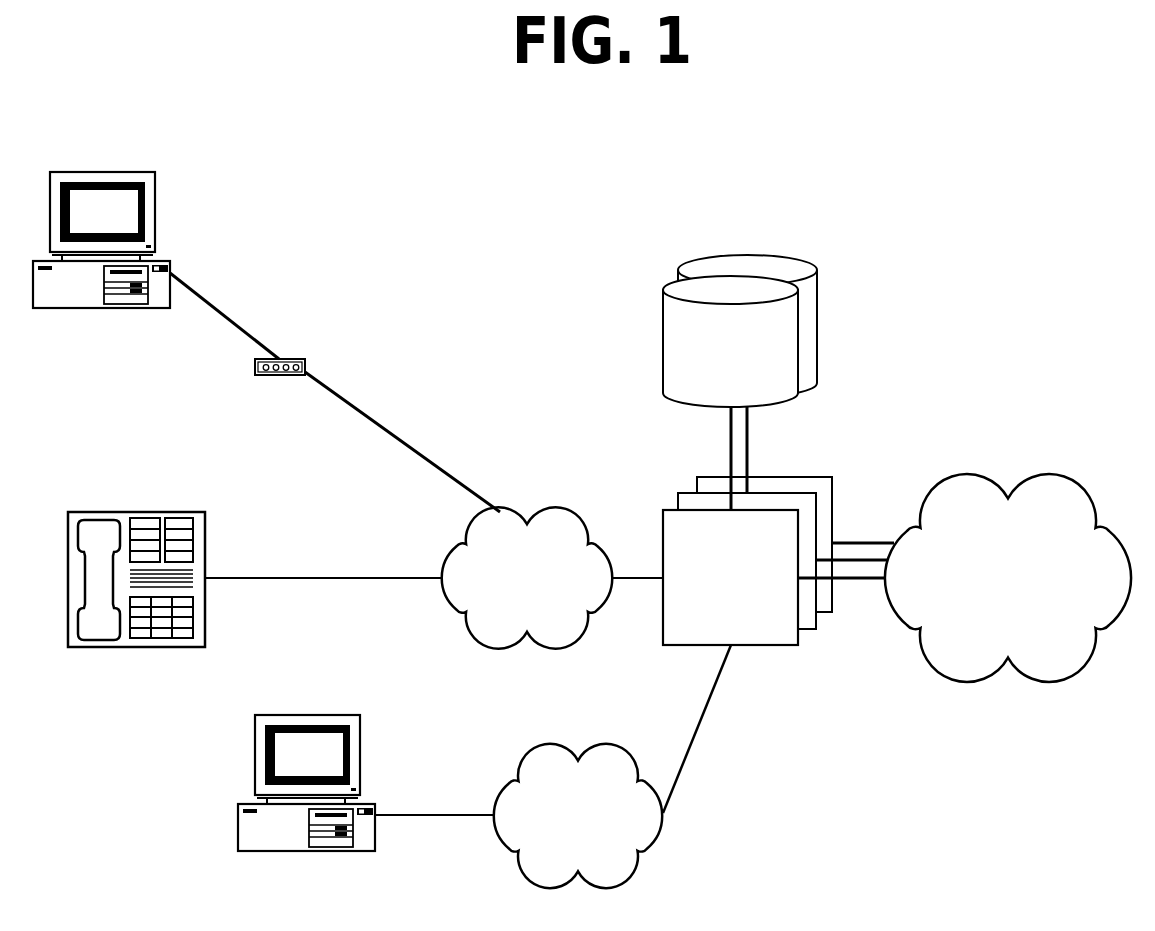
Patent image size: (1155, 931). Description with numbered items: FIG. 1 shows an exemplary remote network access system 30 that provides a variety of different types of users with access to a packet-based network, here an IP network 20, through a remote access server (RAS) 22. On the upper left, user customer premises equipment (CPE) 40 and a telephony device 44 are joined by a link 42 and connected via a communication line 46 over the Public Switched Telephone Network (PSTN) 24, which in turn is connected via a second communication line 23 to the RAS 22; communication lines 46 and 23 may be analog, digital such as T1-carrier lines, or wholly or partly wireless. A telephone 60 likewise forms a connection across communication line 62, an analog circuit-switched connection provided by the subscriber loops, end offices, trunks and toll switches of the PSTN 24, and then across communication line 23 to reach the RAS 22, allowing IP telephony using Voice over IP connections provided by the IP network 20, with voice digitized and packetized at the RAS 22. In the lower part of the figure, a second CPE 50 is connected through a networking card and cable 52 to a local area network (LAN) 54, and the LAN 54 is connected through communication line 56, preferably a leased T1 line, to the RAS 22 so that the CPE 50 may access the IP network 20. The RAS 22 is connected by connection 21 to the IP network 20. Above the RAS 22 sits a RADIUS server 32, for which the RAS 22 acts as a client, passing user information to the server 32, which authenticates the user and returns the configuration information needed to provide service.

The IP network 20 is at (995, 616).
The connection 21 is at (867, 582).
The remote access server 22 is at (717, 616).
The second communication line 23 is at (635, 577).
The Public Switched Telephone Network 24 is at (514, 616).
The remote network access system 30 is at (494, 375).
The RADIUS server 32 is at (740, 331).
The customer premises equipment 40 is at (155, 188).
The connection between CPE and telephony device 42 is at (228, 316).
The telephony device 44 is at (279, 358).
The communication line 46 is at (408, 436).
The second CPE 50 is at (358, 747).
The networking card and cable 52 is at (455, 815).
The local area network 54 is at (607, 747).
The communication line 56 is at (698, 733).
The telephone 60 is at (138, 512).
The communication line 62 is at (330, 578).